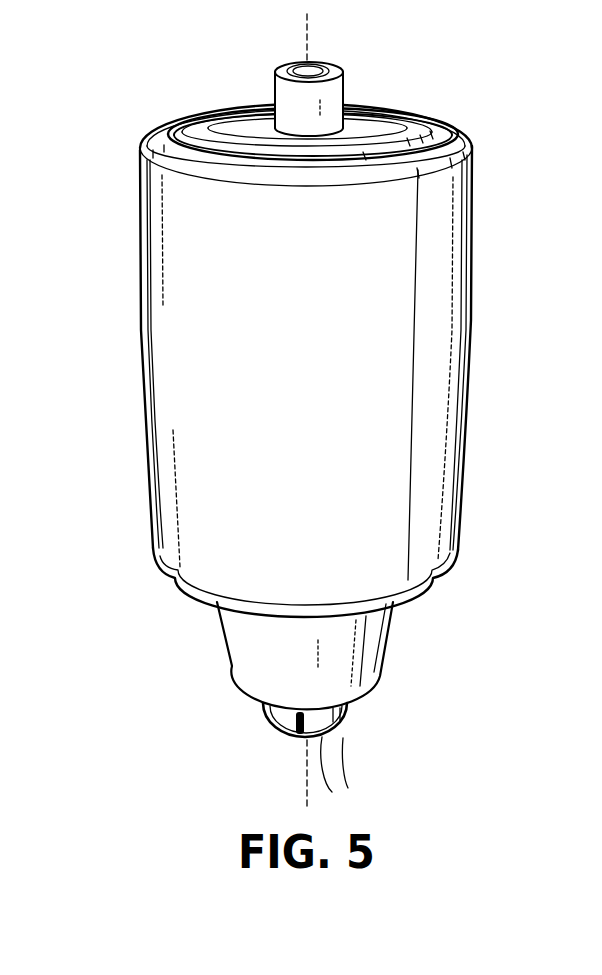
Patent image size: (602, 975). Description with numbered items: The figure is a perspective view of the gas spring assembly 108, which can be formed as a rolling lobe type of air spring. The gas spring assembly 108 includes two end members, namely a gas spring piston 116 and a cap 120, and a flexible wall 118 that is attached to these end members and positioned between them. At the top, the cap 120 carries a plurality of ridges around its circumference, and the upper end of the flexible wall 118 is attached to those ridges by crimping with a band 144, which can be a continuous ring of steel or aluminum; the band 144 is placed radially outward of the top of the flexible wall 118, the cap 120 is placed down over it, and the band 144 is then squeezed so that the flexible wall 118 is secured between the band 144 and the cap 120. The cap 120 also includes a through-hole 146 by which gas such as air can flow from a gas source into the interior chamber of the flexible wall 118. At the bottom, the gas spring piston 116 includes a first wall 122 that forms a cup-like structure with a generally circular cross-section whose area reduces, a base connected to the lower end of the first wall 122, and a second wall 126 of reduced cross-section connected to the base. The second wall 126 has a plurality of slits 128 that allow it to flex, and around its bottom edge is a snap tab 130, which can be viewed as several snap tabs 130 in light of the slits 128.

The gas spring assembly 108 is at (76, 149).
The flexible wall 118 is at (459, 273).
The band 144 is at (467, 143).
The cap 120 is at (336, 88).
The through-hole 146 is at (313, 62).
The gas spring piston 116 is at (398, 645).
The first wall 122 is at (377, 623).
The second wall 126 is at (350, 705).
The slits 128 is at (297, 735).
The snap tab 130 is at (337, 778).